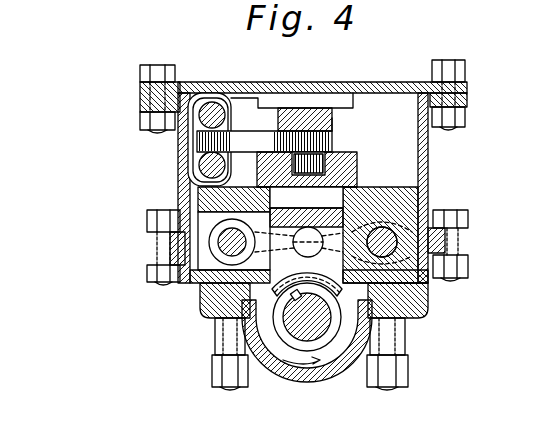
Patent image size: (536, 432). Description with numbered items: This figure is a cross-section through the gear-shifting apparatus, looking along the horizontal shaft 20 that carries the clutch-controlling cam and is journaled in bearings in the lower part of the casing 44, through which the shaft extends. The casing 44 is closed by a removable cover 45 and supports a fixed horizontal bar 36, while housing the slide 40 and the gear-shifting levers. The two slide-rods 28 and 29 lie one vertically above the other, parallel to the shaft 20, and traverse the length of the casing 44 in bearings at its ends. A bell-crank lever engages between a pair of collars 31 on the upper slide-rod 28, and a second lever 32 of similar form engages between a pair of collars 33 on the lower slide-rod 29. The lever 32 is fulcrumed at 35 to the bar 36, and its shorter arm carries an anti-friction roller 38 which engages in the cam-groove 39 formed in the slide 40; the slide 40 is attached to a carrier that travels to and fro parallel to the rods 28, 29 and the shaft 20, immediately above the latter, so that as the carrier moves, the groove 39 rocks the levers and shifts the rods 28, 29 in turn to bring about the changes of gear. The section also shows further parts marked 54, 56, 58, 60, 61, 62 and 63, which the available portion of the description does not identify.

The horizontal shaft 20 is at (297, 330).
The slide-rod 28 is at (227, 115).
The slide-rod 29 is at (227, 168).
The pair of collars 31 is at (210, 96).
The lever 32 is at (263, 140).
The pair of collars 33 is at (183, 176).
The fulcrum 35 is at (333, 111).
The fixed horizontal bar 36 is at (335, 122).
The anti-friction roller 38 is at (330, 163).
The cam-groove 39 is at (358, 176).
The slide 40 is at (358, 158).
The casing 44 is at (430, 152).
The removable cover 45 is at (306, 82).
The bearing ring 54 is at (274, 280).
The ball 56 is at (300, 228).
The pad 58 is at (338, 283).
The bolt 60 is at (184, 281).
The block 61 is at (412, 213).
The tapered seat 62 is at (304, 200).
The bearing housing 63 is at (430, 286).